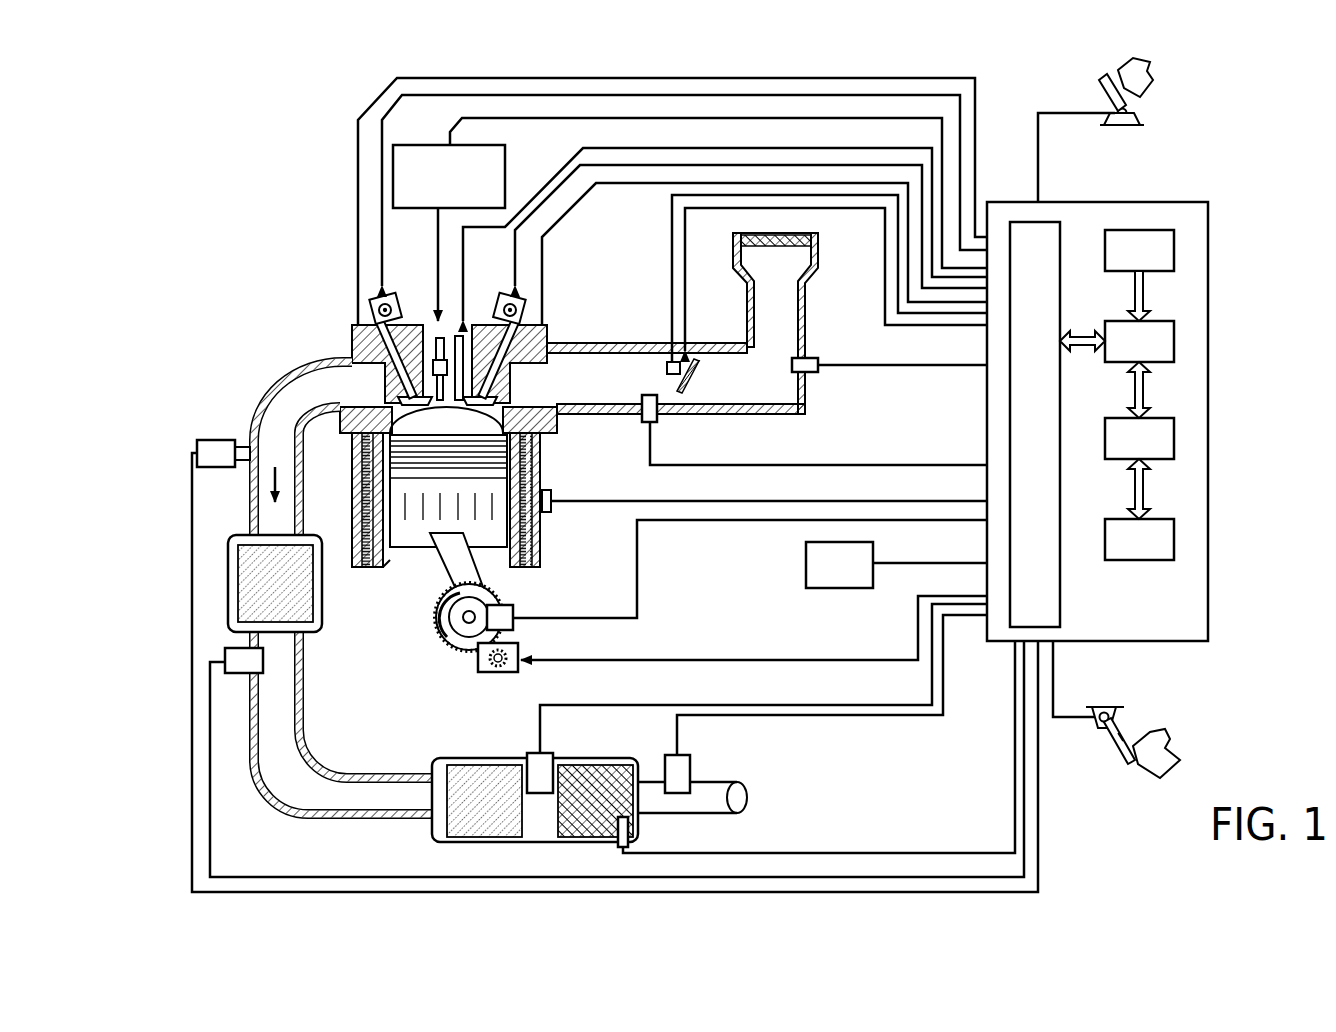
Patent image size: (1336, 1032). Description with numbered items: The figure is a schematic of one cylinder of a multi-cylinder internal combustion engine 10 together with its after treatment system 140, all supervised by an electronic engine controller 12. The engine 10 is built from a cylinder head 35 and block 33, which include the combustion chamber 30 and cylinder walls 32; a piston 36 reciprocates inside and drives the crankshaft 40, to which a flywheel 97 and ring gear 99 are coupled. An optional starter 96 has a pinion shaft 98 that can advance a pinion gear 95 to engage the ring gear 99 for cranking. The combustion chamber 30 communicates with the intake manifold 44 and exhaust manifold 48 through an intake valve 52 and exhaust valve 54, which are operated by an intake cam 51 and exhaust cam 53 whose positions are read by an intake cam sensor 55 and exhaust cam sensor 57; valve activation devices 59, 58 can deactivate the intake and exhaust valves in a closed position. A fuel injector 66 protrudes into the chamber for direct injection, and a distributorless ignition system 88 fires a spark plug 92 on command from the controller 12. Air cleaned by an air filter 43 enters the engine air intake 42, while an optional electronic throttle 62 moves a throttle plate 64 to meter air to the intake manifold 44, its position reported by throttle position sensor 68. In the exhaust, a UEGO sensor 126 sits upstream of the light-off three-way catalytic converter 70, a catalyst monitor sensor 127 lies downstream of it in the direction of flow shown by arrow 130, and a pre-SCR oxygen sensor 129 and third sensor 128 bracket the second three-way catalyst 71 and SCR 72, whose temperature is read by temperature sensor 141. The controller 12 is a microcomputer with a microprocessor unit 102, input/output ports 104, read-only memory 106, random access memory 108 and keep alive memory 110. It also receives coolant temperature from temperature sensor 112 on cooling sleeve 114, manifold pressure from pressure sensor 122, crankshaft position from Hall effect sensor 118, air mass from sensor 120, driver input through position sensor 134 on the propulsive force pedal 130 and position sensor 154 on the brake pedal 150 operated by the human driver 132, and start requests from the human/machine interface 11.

The internal combustion engine 10 is at (674, 435).
The human/machine interface 11 is at (839, 565).
The electronic engine controller 12 is at (1138, 406).
The combustion chamber 30 is at (433, 422).
The cylinder walls 32 is at (392, 557).
The block 33 is at (350, 447).
The cylinder head 35 is at (346, 326).
The piston 36 is at (432, 517).
The crankshaft 40 is at (458, 640).
The engine air intake 42 is at (737, 294).
The air filter 43 is at (793, 247).
The intake manifold 44 is at (613, 389).
The exhaust manifold 48 is at (334, 396).
The intake cam 51 is at (498, 327).
The intake valve 52 is at (496, 387).
The exhaust cam 53 is at (393, 293).
The exhaust valve 54 is at (392, 393).
The intake cam sensor 55 is at (528, 314).
The exhaust cam sensor 57 is at (368, 312).
The valve activation device 58 is at (398, 312).
The valve activation device 59 is at (497, 311).
The electronic throttle 62 is at (692, 378).
The throttle plate 64 is at (683, 392).
The fuel injector 66 is at (465, 336).
The throttle position sensor 68 is at (670, 364).
The light-off three-way catalytic converter 70 is at (282, 594).
The second three-way catalyst 71 is at (502, 814).
The SCR 72 is at (602, 814).
The distributorless ignition system 88 is at (408, 145).
The spark plug 92 is at (436, 342).
The pinion gear 95 is at (507, 670).
The starter 96 is at (512, 672).
The flywheel 97 is at (445, 613).
The pinion shaft 98 is at (497, 668).
The ring gear 99 is at (467, 660).
The microprocessor unit 102 is at (1177, 340).
The input/output ports 104 is at (1062, 240).
The read-only memory 106 is at (1190, 242).
The random access memory 108 is at (1177, 437).
The keep alive memory 110 is at (1177, 540).
The temperature sensor 112 is at (552, 502).
The cooling sleeve 114 is at (530, 534).
The Hall effect sensor 118 is at (516, 600).
The air mass sensor 120 is at (814, 358).
The pressure sensor 122 is at (647, 422).
The UEGO sensor 126 is at (197, 446).
The catalyst monitor sensor 127 is at (242, 673).
The third sensor 128 is at (670, 757).
The pre-SCR oxygen sensor 129 is at (530, 757).
The propulsive force pedal 130 is at (272, 480).
The human driver 132 is at (1152, 75).
The position sensor 134 is at (1137, 112).
The after treatment system 140 is at (559, 657).
The temperature sensor 141 is at (630, 834).
The brake pedal 150 is at (1128, 765).
The position sensor 154 is at (1095, 717).